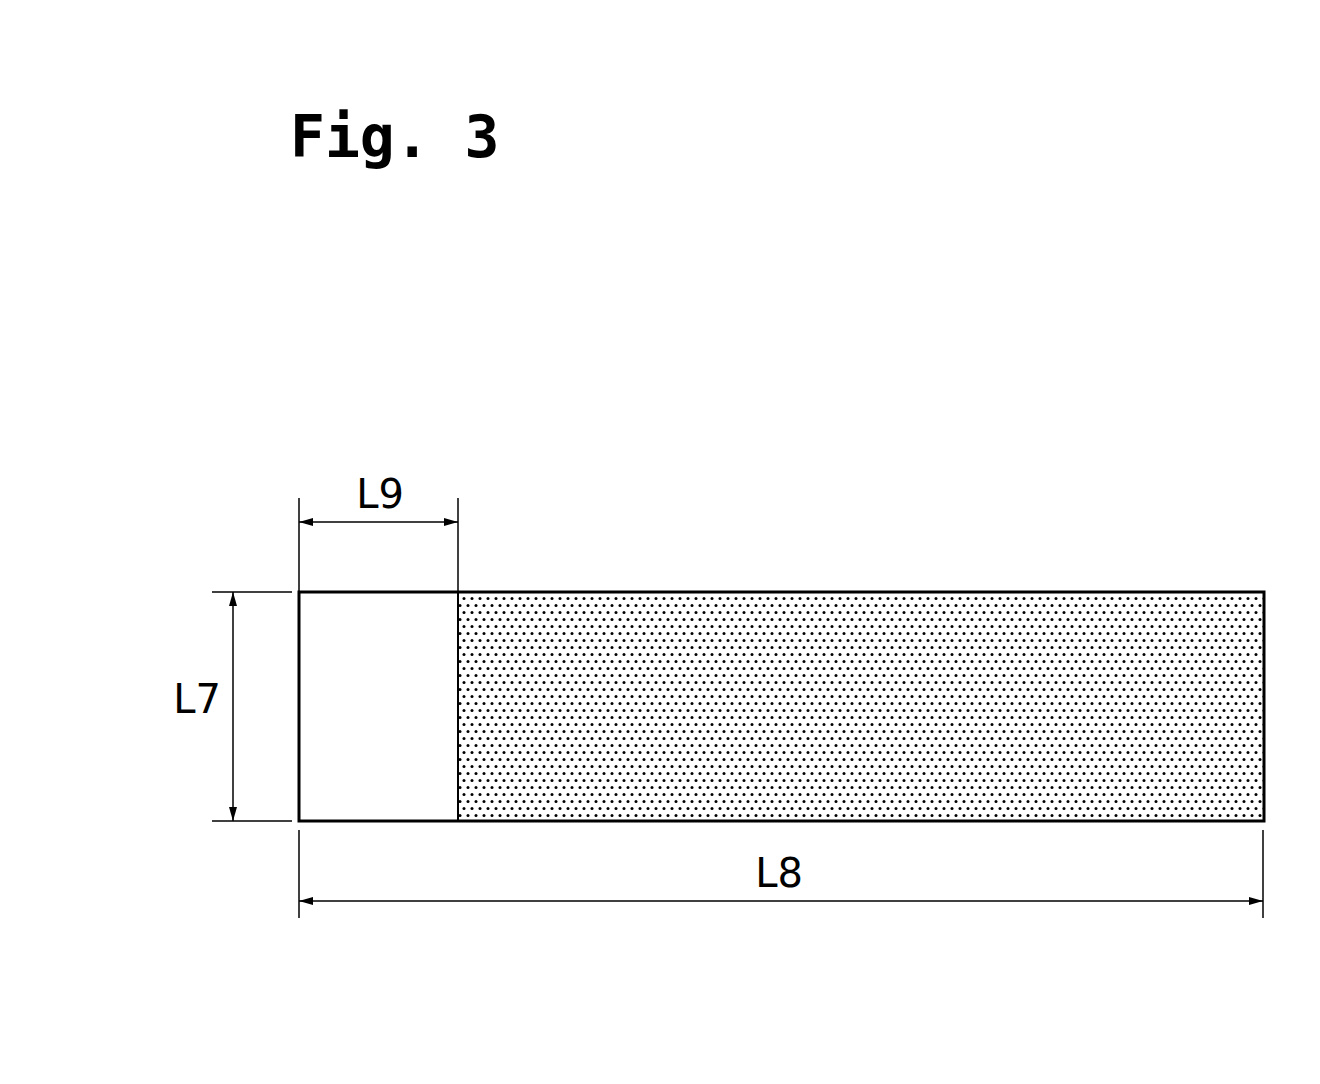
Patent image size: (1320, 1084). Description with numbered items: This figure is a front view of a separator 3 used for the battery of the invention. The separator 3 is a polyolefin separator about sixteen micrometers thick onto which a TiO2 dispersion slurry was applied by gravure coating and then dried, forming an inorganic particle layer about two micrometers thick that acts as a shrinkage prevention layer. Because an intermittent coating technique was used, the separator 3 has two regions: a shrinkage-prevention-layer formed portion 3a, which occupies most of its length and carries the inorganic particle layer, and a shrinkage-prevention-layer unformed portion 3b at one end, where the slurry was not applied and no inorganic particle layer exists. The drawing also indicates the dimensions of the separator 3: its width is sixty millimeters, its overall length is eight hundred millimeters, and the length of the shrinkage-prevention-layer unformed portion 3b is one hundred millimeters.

The separator 3 is at (960, 554).
The shrinkage-prevention-layer formed portion 3a is at (663, 628).
The shrinkage-prevention-layer unformed portion 3b is at (418, 690).